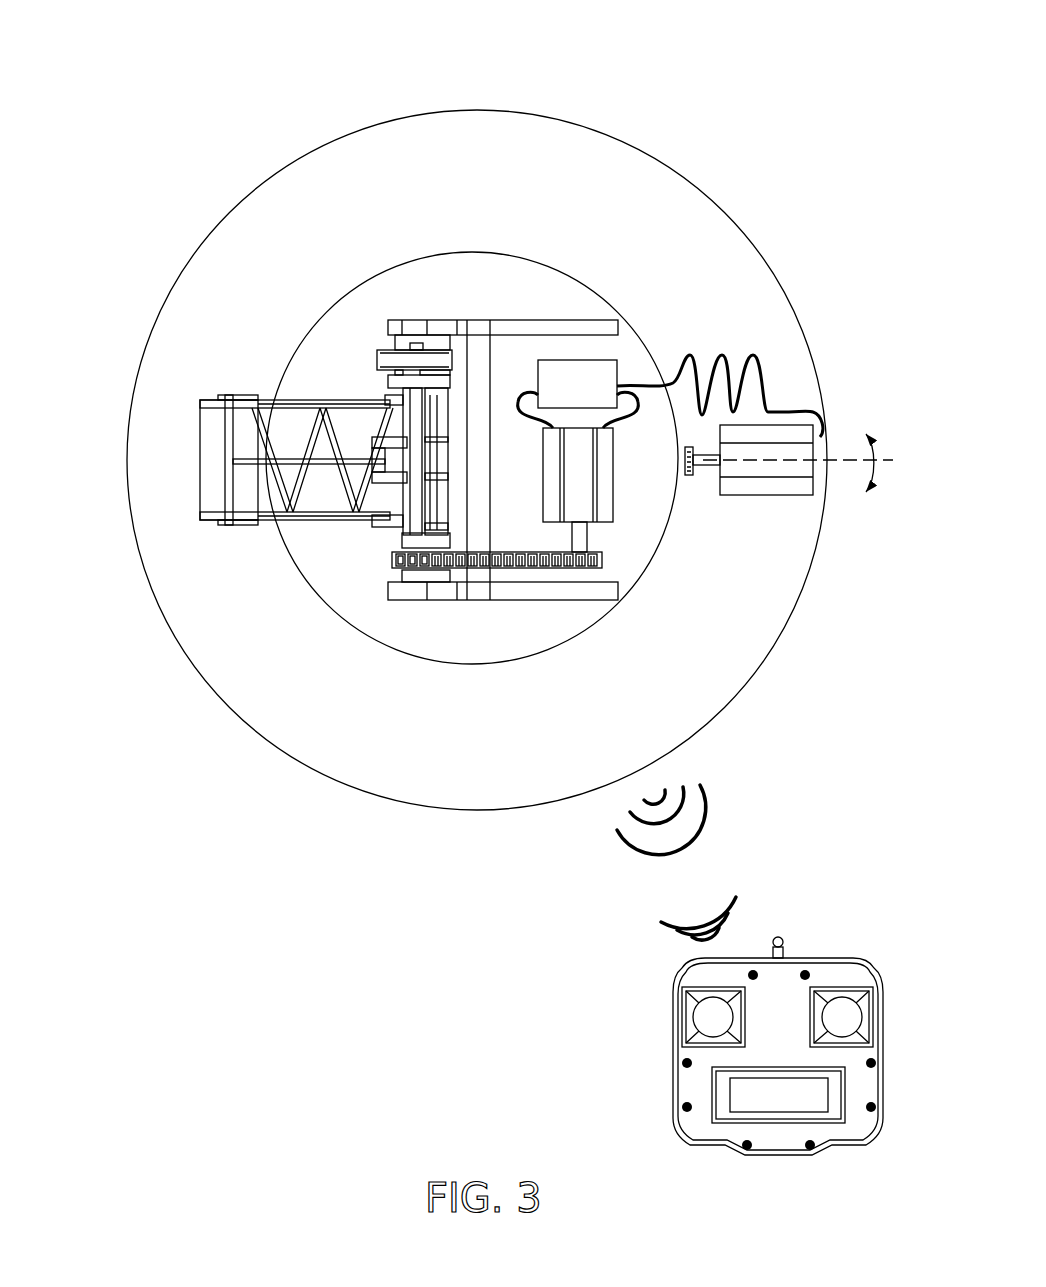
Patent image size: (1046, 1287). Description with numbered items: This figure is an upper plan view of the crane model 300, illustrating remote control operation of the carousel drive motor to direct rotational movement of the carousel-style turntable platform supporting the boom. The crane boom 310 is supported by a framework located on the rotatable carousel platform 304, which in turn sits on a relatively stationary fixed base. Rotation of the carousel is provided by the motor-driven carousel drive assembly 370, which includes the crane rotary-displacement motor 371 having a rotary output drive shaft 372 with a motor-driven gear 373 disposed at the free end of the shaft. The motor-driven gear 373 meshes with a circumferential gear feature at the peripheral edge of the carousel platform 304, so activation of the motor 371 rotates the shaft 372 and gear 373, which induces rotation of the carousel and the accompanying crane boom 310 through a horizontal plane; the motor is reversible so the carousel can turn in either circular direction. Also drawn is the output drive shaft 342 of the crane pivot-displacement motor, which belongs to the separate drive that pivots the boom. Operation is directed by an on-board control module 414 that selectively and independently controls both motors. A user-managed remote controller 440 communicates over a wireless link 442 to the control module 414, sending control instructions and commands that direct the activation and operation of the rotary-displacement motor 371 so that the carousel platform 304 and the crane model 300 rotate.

The crane model 300 is at (137, 100).
The carousel platform 304 is at (578, 262).
The crane boom 310 is at (242, 540).
The output drive shaft 342 is at (590, 538).
The control module 414 is at (605, 370).
The carousel drive assembly 370 is at (774, 477).
The crane rotary-displacement motor 371 is at (795, 437).
The rotary output drive shaft 372 is at (706, 478).
The motor-driven gear 373 is at (686, 461).
The remote controller 440 is at (868, 938).
The wireless link 442 is at (722, 845).